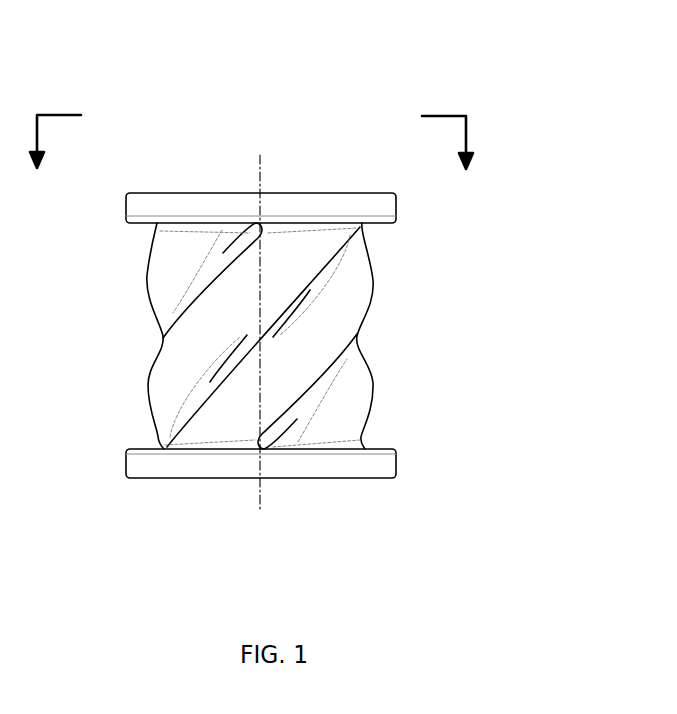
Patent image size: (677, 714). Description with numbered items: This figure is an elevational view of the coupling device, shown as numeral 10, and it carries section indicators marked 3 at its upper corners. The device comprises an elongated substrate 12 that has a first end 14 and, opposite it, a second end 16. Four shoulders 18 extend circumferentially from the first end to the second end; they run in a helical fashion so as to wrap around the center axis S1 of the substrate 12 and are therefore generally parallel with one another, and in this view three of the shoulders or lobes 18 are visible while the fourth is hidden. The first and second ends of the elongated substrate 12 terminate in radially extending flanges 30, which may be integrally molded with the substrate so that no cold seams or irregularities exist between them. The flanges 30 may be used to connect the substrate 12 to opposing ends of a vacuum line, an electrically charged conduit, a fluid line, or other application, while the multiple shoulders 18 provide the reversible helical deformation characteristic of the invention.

The coupling device 10 is at (362, 52).
The elongated substrate 12 is at (334, 339).
The first end 14 is at (380, 230).
The second end 16 is at (380, 445).
The shoulders 18 is at (348, 305).
The flanges 30 is at (155, 215).
The center axis S1 is at (263, 359).
The section line 3- 3 is at (254, 122).